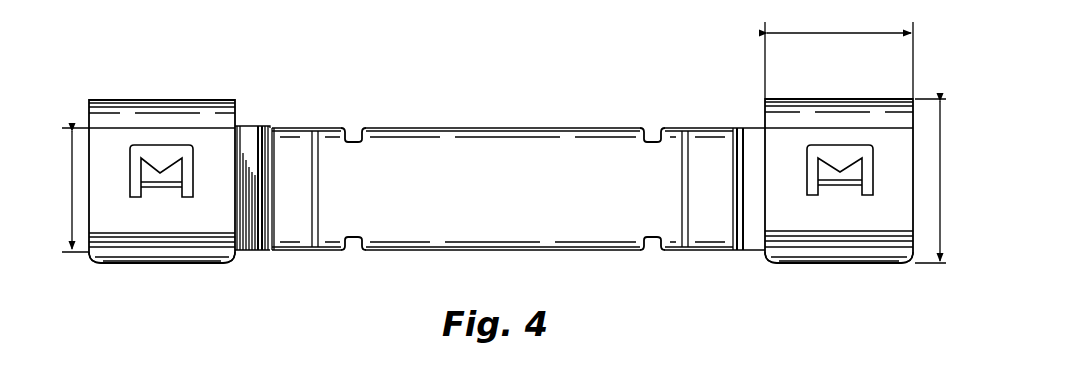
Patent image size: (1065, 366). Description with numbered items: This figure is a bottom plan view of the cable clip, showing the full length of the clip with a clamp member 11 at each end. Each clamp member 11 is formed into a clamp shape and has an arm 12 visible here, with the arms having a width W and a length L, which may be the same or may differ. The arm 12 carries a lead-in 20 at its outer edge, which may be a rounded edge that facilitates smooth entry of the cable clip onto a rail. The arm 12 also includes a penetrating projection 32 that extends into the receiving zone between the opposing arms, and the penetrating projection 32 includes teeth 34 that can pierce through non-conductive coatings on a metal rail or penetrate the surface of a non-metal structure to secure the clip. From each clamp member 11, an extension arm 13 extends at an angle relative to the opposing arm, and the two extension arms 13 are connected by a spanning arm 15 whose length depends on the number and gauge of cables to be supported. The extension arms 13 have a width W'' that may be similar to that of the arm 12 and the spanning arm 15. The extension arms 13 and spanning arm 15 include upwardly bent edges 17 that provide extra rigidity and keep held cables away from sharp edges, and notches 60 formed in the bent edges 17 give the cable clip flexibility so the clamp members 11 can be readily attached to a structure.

The clamp member 11 is at (116, 82).
The arm 12 is at (238, 103).
The extension arm 13 is at (288, 177).
The spanning arm 15 is at (490, 185).
The upwardly bent edge 17 is at (441, 128).
The lead-in 20 is at (160, 257).
The penetrating projection 32 is at (142, 174).
The tooth 34 is at (147, 163).
The notch 60 is at (353, 127).
The width W is at (839, 50).
The width of extension arms W'' is at (68, 190).
The length L is at (938, 181).